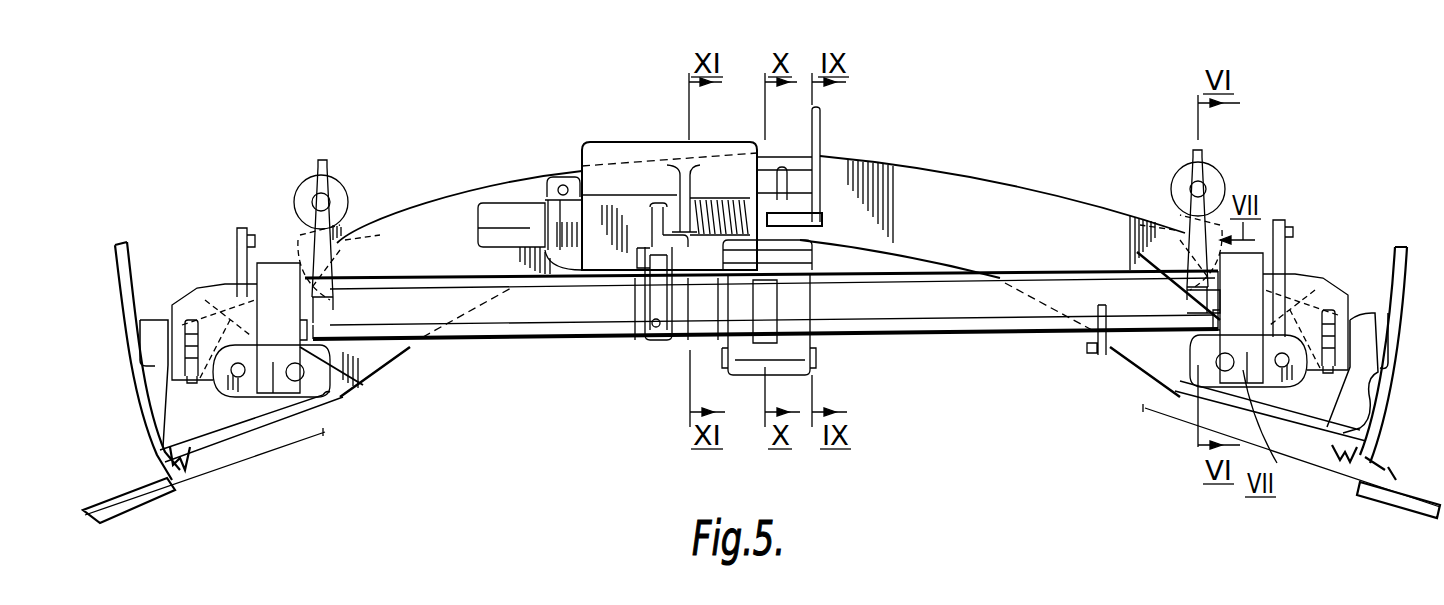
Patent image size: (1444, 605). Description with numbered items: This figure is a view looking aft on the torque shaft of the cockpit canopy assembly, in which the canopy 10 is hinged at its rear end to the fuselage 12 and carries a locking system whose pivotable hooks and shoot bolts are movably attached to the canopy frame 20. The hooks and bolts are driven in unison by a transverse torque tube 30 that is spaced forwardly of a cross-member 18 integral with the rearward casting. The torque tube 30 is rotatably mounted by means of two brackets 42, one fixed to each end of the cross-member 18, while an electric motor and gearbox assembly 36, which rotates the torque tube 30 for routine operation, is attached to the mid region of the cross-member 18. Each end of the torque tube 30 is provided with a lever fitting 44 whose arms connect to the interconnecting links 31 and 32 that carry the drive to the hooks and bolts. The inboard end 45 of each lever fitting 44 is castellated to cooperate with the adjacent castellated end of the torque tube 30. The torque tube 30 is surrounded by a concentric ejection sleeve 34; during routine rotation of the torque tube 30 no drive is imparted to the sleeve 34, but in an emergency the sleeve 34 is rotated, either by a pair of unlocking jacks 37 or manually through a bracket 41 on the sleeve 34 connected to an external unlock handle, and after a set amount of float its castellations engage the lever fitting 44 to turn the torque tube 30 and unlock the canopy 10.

The canopy 10 is at (119, 333).
The fuselage 12 is at (776, 484).
The cross-member 18 is at (1037, 193).
The canopy frame 20 is at (145, 437).
The torque tube 30 is at (869, 318).
The link 31 is at (234, 238).
The link 32 is at (192, 385).
The ejection sleeve 34 is at (957, 327).
The electric motor and gearbox assembly 36 is at (522, 213).
The unlocking jack 37 is at (296, 203).
The bracket 41 is at (1092, 355).
The bracket 42 is at (340, 370).
The lever fitting 44 is at (180, 328).
The inboard end 45 is at (313, 323).